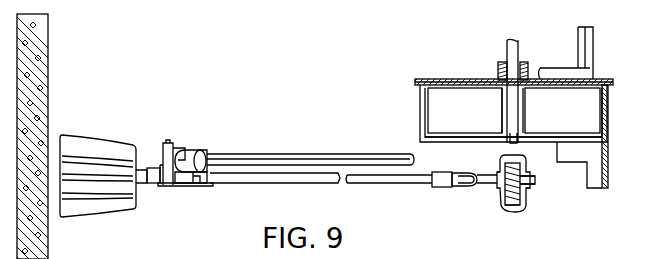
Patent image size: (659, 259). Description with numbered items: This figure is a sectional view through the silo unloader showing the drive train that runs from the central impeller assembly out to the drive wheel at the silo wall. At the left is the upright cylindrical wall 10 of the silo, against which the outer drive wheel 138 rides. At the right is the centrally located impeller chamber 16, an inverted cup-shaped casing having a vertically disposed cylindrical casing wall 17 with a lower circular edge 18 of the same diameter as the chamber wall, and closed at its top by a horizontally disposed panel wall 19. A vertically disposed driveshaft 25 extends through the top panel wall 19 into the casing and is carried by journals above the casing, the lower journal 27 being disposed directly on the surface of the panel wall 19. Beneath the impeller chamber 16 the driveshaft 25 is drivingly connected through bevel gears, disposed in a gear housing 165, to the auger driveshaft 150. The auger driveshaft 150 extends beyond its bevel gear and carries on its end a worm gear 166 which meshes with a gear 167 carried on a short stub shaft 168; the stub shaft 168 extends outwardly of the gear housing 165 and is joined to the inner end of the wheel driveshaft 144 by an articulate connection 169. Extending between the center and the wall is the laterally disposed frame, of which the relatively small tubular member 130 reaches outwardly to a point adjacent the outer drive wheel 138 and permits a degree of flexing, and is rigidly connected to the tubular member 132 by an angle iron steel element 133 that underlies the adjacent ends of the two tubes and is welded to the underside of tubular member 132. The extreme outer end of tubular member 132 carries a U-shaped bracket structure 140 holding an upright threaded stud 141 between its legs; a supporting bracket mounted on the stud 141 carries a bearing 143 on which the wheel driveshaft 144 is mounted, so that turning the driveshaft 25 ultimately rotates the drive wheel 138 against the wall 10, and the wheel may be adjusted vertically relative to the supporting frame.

The upright cylindrical wall 10 is at (40, 38).
The impeller chamber 16 is at (465, 70).
The cylindrical casing wall 17 is at (420, 106).
The lower circular edge 18 is at (420, 136).
The panel wall 19 is at (432, 79).
The driveshaft 25 is at (515, 50).
The lower journal 27 is at (529, 70).
The tubular member 130 is at (275, 154).
The tubular member 132 is at (190, 150).
The angle iron steel element 133 is at (198, 187).
The outer drive wheel 138 is at (85, 150).
The U-shaped bracket structure 140 is at (178, 148).
The threaded stud 141 is at (167, 141).
The bearing 143 is at (153, 185).
The wheel driveshaft 144 is at (300, 184).
The auger driveshaft 150 is at (507, 203).
The gear housing 165 is at (528, 200).
The worm gear 166 is at (520, 208).
The gear 167 is at (500, 195).
The stub shaft 168 is at (534, 180).
The articulate connection 169 is at (440, 188).